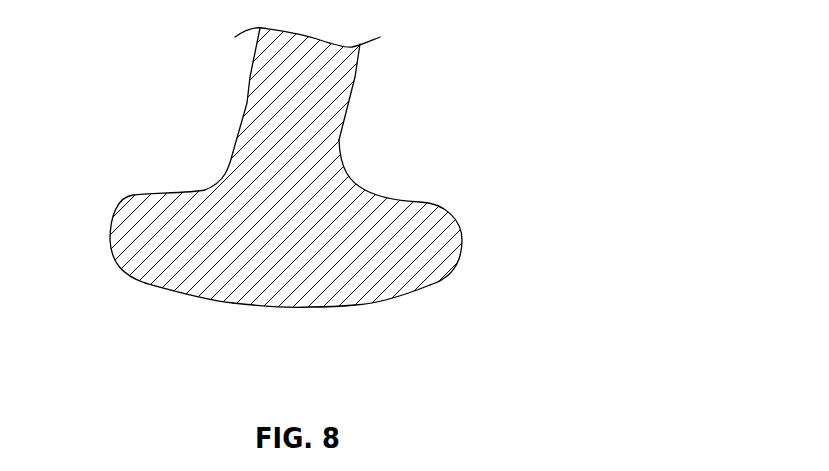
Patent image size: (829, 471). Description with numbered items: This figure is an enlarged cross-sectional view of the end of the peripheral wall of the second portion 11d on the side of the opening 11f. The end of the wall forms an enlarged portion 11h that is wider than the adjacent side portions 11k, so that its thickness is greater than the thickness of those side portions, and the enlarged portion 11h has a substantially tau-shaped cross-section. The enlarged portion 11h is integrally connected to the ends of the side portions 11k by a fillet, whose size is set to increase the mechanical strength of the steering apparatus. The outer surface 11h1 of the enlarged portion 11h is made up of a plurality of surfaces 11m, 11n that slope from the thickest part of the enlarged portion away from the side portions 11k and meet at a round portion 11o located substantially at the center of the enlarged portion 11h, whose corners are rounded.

The enlarged portion 11h is at (112, 183).
The second portion 11d is at (468, 90).
The side portions 11k is at (262, 108).
The opening 11f is at (492, 255).
The sloping surface 11m is at (193, 297).
The round portion 11o is at (305, 308).
The sloping surface 11n is at (371, 306).
The outer surface 11h1 is at (231, 323).